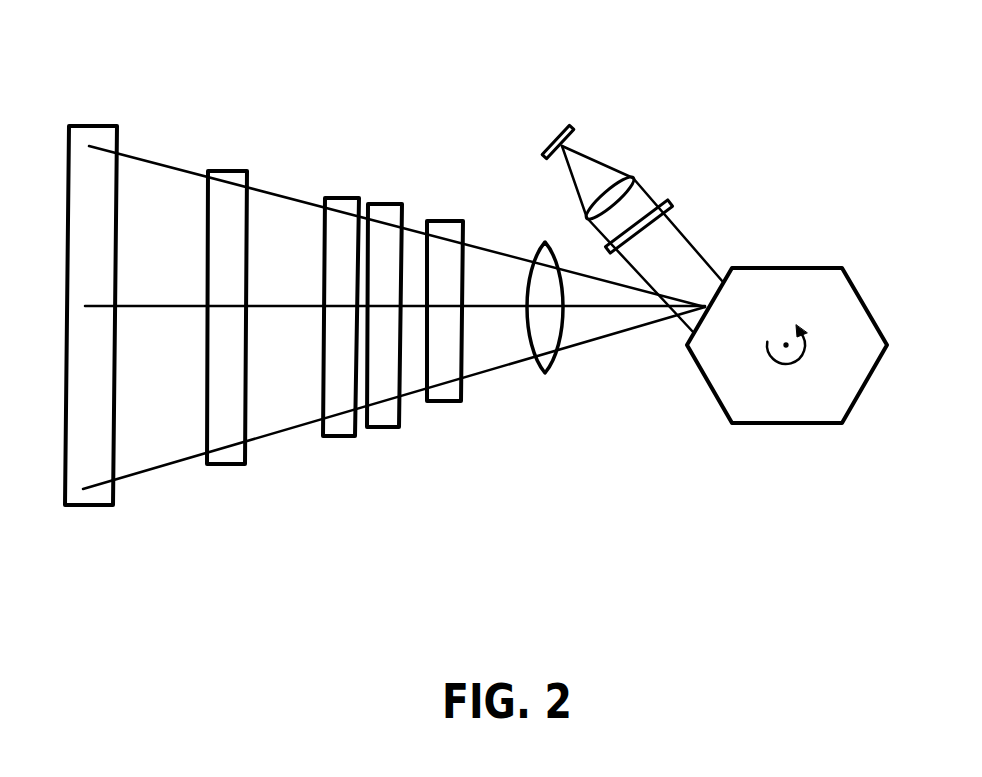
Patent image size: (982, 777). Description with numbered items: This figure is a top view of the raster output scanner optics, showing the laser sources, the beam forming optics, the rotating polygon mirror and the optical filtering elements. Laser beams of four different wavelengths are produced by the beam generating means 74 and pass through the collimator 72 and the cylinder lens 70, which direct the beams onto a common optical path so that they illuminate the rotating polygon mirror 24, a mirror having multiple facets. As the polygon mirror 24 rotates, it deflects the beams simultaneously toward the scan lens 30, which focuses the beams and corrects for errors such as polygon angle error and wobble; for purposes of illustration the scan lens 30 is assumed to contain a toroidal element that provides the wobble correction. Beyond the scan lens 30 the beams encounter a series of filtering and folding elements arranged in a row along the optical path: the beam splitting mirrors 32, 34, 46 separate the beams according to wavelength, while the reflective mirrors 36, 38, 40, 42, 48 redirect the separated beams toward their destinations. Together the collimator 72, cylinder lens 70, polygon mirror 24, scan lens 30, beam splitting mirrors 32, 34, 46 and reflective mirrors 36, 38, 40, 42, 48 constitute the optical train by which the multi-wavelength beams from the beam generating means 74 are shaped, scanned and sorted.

The polygon mirror 24 is at (867, 380).
The scan lens 30 is at (545, 373).
The beam splitting mirror 32 is at (519, 355).
The beam splitting mirror 34 is at (425, 369).
The reflective mirror 36 is at (232, 465).
The reflective mirror 38 is at (340, 437).
The reflective mirror 40 is at (95, 507).
The reflective mirror 42 is at (380, 428).
The beam splitting mirror 46 is at (519, 355).
The reflective mirror 48 is at (447, 402).
The cylinder lens 70 is at (673, 205).
The collimator 72 is at (633, 180).
The beam generating means 74 is at (572, 130).